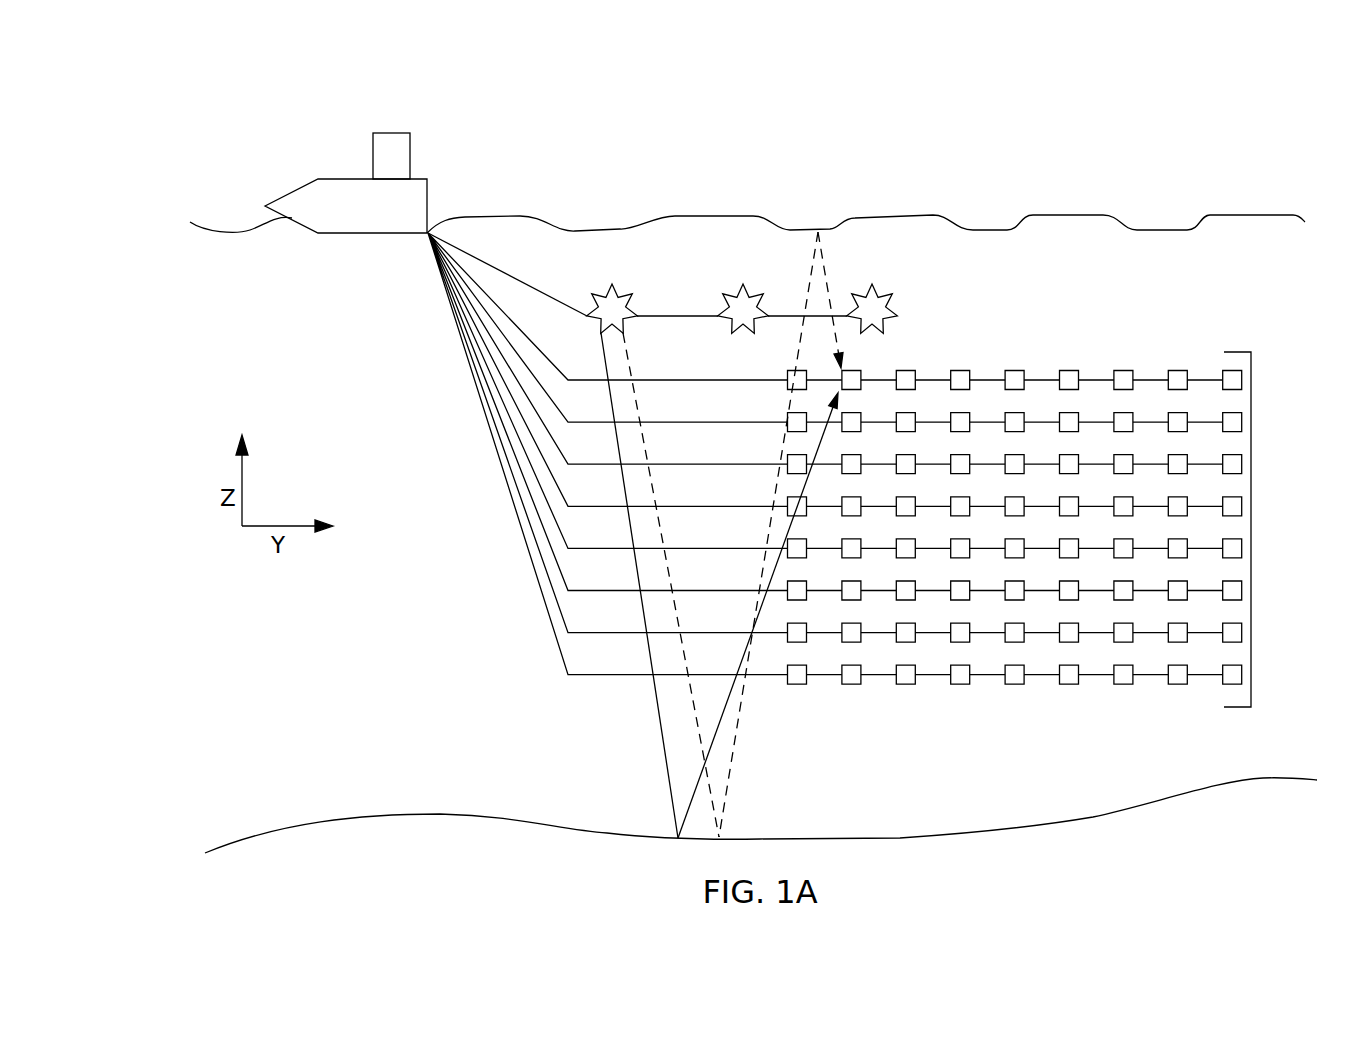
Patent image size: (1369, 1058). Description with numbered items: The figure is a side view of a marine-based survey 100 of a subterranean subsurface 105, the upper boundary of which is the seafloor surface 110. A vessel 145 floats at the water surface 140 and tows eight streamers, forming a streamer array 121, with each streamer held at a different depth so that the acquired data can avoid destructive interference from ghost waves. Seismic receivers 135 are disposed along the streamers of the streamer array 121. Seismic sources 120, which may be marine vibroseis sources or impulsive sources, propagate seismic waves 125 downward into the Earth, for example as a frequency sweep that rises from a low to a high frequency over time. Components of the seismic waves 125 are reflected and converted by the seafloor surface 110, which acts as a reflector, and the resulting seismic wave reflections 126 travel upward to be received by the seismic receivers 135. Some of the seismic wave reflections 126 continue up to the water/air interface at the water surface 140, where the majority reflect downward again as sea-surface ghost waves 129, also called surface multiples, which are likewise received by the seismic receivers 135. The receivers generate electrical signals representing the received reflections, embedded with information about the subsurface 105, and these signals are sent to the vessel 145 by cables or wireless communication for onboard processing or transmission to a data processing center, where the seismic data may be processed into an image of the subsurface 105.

The marine-based survey 100 is at (248, 116).
The vessel 145 is at (387, 133).
The water surface 140 is at (1050, 217).
The seafloor surface 110 is at (1093, 817).
The subterranean subsurface 105 is at (364, 882).
The streamer array 121 is at (1251, 526).
The seismic receivers 135 is at (1177, 370).
The seismic sources 120 is at (637, 308).
The seismic waves 125 is at (638, 407).
The seismic wave reflections 126 is at (776, 502).
The sea-surface ghost waves 129 is at (825, 265).